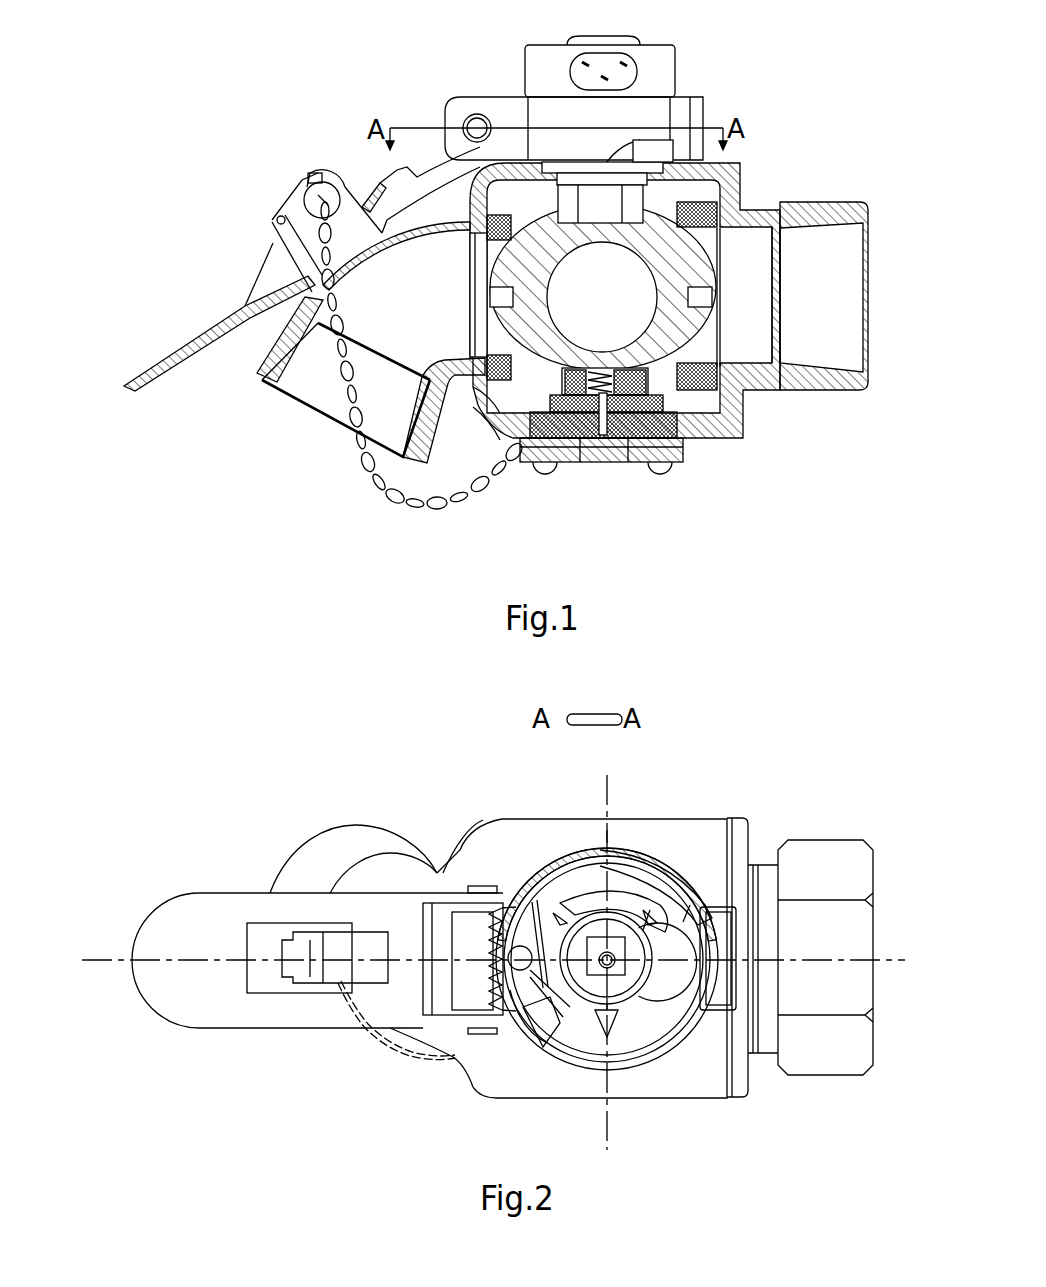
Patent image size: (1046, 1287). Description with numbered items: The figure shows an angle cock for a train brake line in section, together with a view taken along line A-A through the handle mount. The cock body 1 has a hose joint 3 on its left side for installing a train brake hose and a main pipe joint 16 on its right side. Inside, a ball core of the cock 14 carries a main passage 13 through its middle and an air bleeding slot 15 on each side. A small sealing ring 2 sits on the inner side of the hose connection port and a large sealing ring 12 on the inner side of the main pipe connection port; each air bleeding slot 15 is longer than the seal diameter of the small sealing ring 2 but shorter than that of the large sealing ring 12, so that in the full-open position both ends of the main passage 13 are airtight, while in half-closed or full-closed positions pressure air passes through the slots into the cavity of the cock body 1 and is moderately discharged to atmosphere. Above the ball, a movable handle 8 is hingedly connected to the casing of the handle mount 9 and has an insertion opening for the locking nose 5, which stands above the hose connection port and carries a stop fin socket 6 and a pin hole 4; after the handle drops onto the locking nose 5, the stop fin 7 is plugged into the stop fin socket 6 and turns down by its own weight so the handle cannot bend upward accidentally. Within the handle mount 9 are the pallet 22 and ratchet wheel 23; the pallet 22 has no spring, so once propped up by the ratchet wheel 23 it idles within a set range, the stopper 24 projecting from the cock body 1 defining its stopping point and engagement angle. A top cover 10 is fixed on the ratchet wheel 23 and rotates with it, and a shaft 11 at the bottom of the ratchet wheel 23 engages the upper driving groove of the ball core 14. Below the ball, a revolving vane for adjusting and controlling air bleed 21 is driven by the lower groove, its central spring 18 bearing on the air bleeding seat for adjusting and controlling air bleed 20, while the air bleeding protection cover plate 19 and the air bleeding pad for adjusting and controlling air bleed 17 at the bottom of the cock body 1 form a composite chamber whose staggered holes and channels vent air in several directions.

In FIG. 1, the cock body 1 is at (487, 417).
In FIG. 2, the cock body 1 is at (396, 1020).
In FIG. 1, the small sealing ring 2 is at (487, 380).
In FIG. 1, the hose joint 3 is at (315, 383).
In FIG. 1, the pin hole 4 is at (280, 221).
In FIG. 1, the locking nose 5 is at (297, 200).
In FIG. 1, the stop fin socket 6 is at (315, 192).
In FIG. 1, the stop fin 7 is at (322, 171).
In FIG. 2, the stop fin 7 is at (267, 935).
In FIG. 1, the movable handle 8 is at (425, 158).
In FIG. 1, the handle mount 9 is at (518, 113).
In FIG. 2, the handle mount 9 is at (502, 907).
In FIG. 1, the top cover 10 is at (547, 63).
In FIG. 1, the shaft 11 is at (598, 180).
In FIG. 1, the large sealing ring 12 is at (637, 273).
In FIG. 1, the main passage 13 is at (685, 260).
In FIG. 1, the ball core of the cock 14 is at (713, 267).
In FIG. 1, the air bleeding slot 15 is at (693, 297).
In FIG. 1, the main pipe joint 16 is at (805, 372).
In FIG. 1, the air bleeding pad for adjusting and controlling air bleed 17 is at (662, 440).
In FIG. 1, the spring 18 is at (645, 450).
In FIG. 1, the air bleeding protection cover plate 19 is at (592, 450).
In FIG. 1, the air bleeding seat for adjusting and controlling air bleed 20 is at (578, 440).
In FIG. 1, the revolving vane for adjusting and controlling air bleed 21 is at (538, 442).
In FIG. 2, the pallet 22 is at (543, 987).
In FIG. 2, the ratchet wheel 23 is at (597, 927).
In FIG. 2, the stopper 24 is at (660, 893).